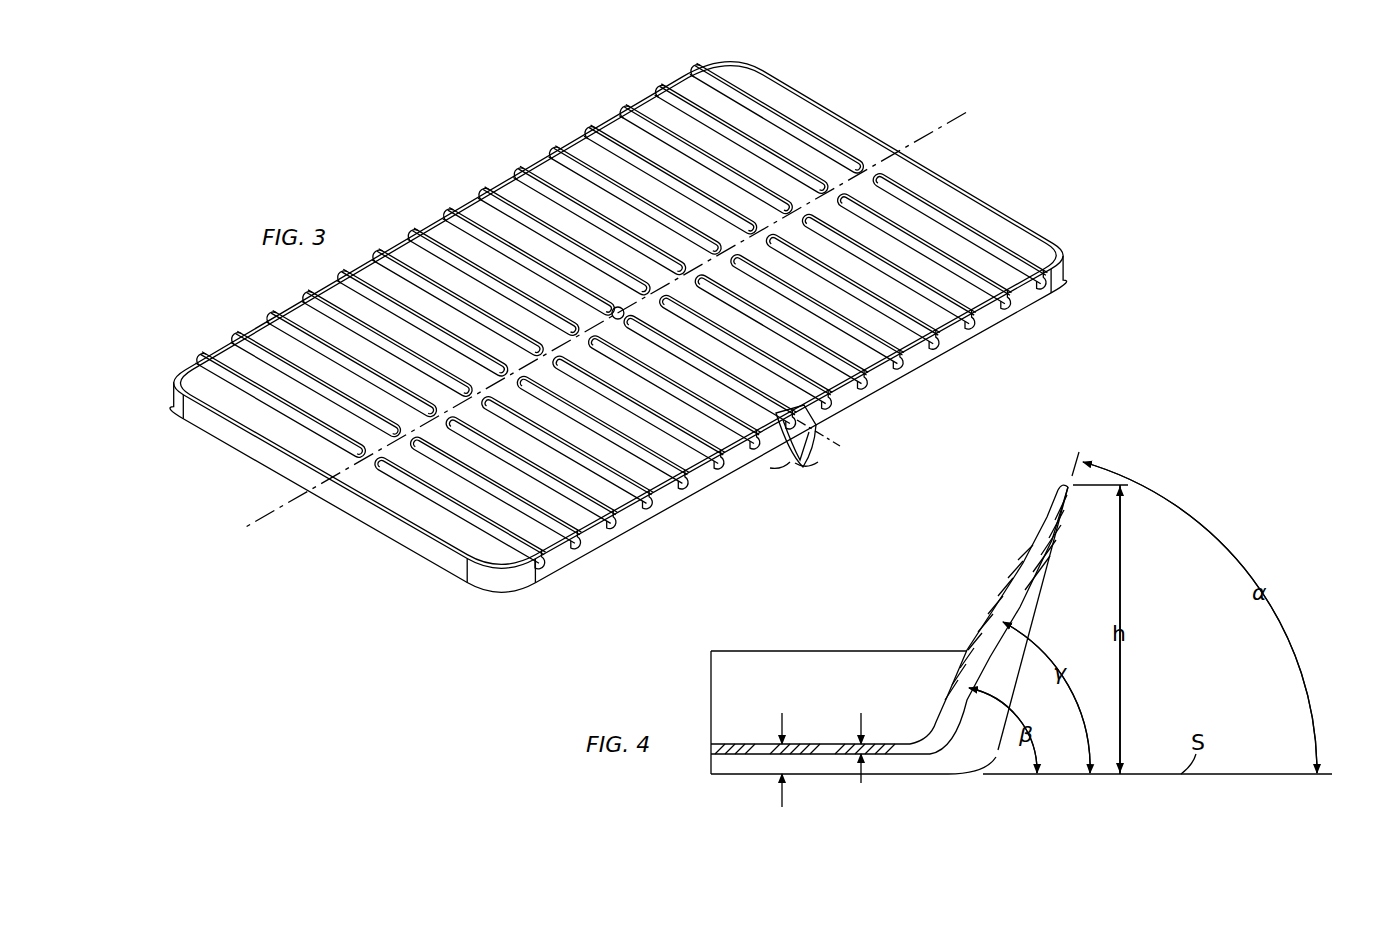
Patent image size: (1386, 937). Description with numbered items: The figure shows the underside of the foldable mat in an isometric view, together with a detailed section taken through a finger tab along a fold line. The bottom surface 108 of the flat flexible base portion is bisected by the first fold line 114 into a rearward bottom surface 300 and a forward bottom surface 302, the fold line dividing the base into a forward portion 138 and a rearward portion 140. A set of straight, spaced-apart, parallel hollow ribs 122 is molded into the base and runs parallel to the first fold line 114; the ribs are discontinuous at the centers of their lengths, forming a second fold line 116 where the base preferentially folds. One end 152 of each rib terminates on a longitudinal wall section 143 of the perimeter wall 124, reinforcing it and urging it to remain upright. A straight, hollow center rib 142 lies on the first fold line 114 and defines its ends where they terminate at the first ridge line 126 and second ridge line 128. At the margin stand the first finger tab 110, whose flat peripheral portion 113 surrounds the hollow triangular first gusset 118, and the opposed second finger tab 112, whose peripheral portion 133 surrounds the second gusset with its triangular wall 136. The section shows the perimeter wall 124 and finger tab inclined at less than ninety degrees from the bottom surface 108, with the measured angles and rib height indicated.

In FIG. 3, the bottom surface 108 is at (826, 124).
In FIG. 4, the bottom surface 108 is at (905, 778).
In FIG. 3, the first finger tab 110 is at (800, 482).
In FIG. 4, the second finger tab 112 is at (1053, 509).
In FIG. 3, the peripheral portion 113 is at (783, 464).
In FIG. 3, the first fold line 114 is at (832, 436).
In FIG. 3, the second fold line 116 is at (952, 121).
In FIG. 3, the first gusset 118 is at (812, 472).
In FIG. 3, the ribs 122 is at (524, 172).
In FIG. 4, the perimeter wall 124 is at (770, 678).
In FIG. 3, the first ridge line 126 is at (817, 456).
In FIG. 4, the second ridge line 128 is at (997, 610).
In FIG. 4, the peripheral portion 133 is at (1050, 528).
In FIG. 4, the second substantially triangular wall 136 is at (1028, 602).
In FIG. 3, the forward portion 138 is at (430, 514).
In FIG. 3, the rearward portion 140 is at (1020, 231).
In FIG. 3, the center rib 142 is at (480, 238).
In FIG. 4, the center rib 142 is at (748, 765).
In FIG. 3, the longitudinal wall section 143 is at (606, 540).
In FIG. 3, the rib end 152 is at (938, 342).
In FIG. 3, the rearward bottom surface 300 is at (964, 205).
In FIG. 3, the forward bottom surface 302 is at (270, 338).